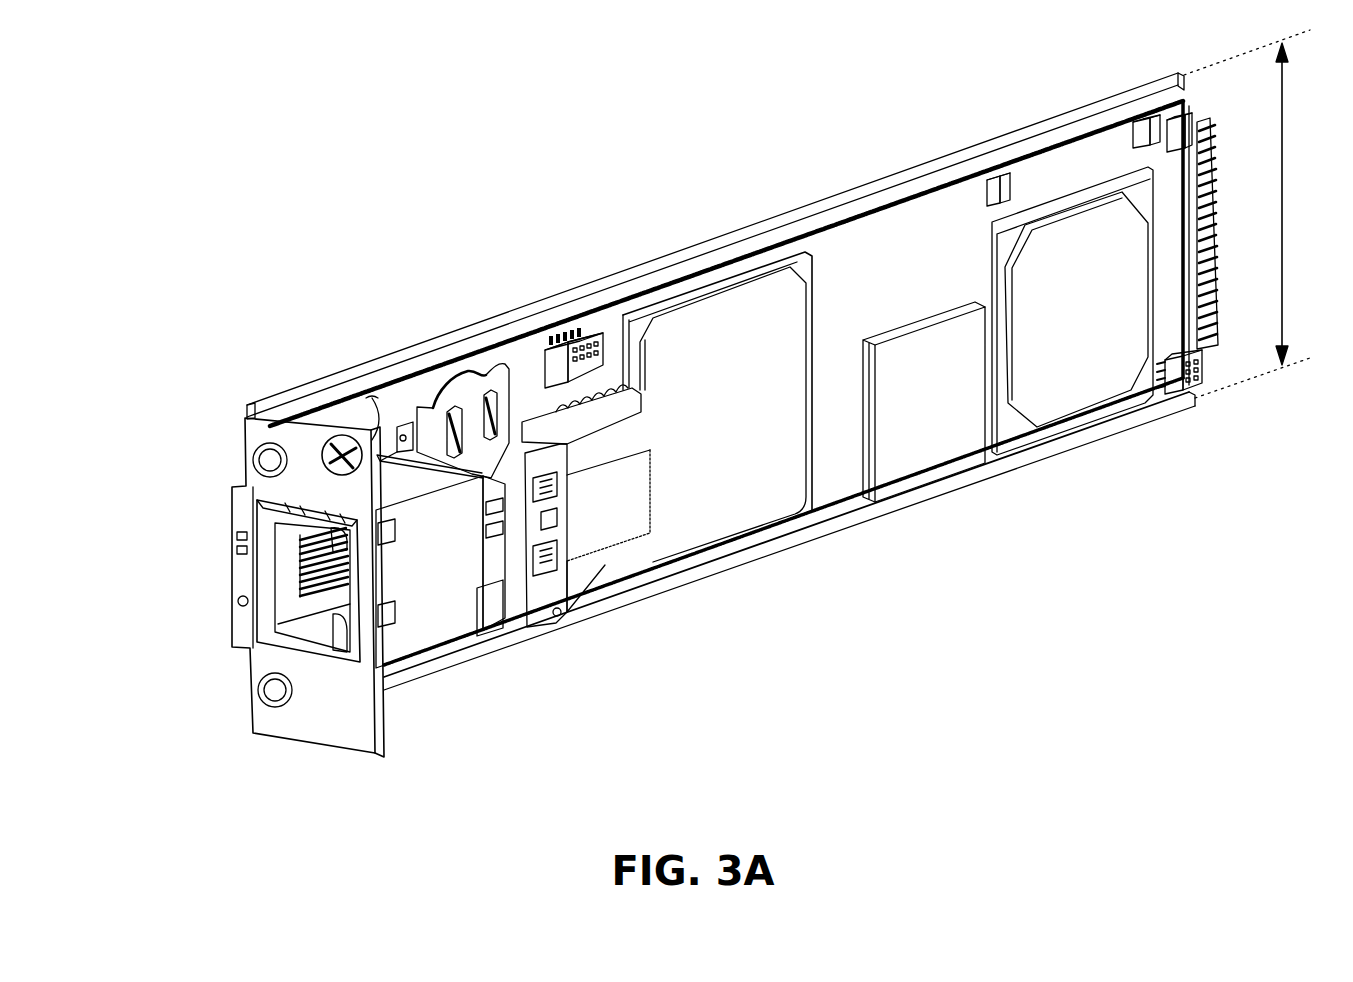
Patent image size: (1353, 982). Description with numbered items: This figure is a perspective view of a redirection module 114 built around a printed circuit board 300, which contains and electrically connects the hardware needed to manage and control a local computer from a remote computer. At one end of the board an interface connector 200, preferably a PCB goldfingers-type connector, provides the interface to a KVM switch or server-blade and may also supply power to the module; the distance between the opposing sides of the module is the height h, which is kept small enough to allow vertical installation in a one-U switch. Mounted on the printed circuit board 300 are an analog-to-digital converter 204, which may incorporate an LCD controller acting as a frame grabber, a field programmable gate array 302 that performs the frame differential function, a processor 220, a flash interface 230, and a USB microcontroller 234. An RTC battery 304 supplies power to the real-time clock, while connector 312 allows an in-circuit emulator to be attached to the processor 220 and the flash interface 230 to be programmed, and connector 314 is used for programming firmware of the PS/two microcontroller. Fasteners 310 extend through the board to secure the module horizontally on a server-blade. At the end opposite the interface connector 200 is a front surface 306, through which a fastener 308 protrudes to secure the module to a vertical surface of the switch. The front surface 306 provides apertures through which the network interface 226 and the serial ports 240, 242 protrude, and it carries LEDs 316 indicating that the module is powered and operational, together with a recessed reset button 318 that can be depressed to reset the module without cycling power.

The redirection module 114 is at (577, 198).
The interface connector 200 is at (1213, 188).
The analog-to-digital converter 204 is at (1043, 398).
The processor 220 is at (720, 510).
The network interface 226 is at (300, 612).
The flash interface 230 is at (628, 588).
The USB microcontroller 234 is at (495, 602).
The RS-232 port 240 is at (270, 461).
The RS-232 port 242 is at (270, 692).
The printed circuit board 300 is at (918, 243).
The field programmable gate array 302 is at (903, 445).
The RTC battery 304 is at (465, 397).
The front surface 306 is at (352, 722).
The fastener 308 is at (340, 447).
The fasteners 310 is at (355, 428).
The connector 312 is at (573, 348).
The connector 314 is at (1188, 385).
The LEDs 316 is at (238, 553).
The reset button 318 is at (243, 604).